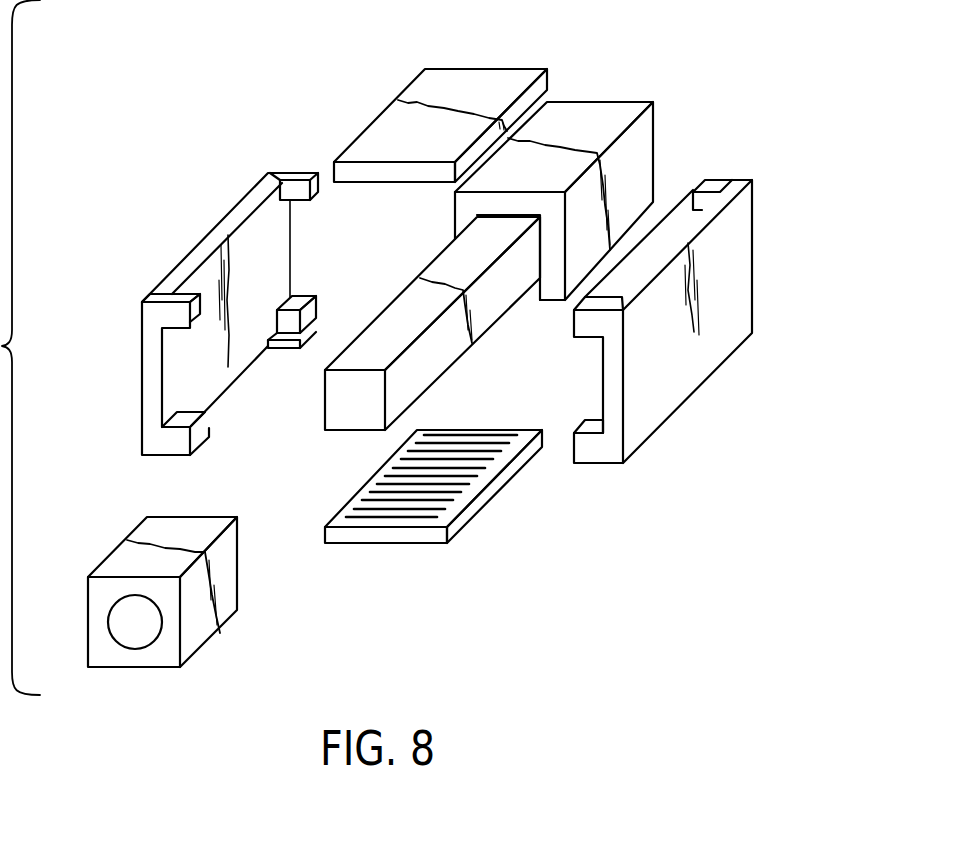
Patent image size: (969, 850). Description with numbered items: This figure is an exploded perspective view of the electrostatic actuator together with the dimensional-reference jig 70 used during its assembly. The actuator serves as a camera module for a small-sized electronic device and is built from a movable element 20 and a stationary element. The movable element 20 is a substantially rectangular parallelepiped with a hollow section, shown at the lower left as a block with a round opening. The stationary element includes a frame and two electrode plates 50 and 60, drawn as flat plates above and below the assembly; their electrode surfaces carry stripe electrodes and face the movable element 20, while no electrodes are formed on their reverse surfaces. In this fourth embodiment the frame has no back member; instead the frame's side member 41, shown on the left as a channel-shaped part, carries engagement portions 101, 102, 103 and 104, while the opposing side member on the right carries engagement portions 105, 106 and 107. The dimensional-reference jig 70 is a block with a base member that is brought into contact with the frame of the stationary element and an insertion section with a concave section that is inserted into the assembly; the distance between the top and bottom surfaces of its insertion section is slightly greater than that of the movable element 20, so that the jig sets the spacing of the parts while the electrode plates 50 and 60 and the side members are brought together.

The movable element 20 is at (231, 582).
The side member 41 is at (230, 312).
The electrode plate 50 is at (465, 78).
The electrode plate 60 is at (502, 488).
The dimensional-reference jig 70 is at (591, 100).
The engagement portion 101 is at (173, 293).
The engagement portion 102 is at (295, 181).
The engagement portion 103 is at (163, 447).
The engagement portion 104 is at (317, 316).
The engagement portion 105 is at (584, 328).
The engagement portion 106 is at (720, 188).
The engagement portion 107 is at (592, 458).